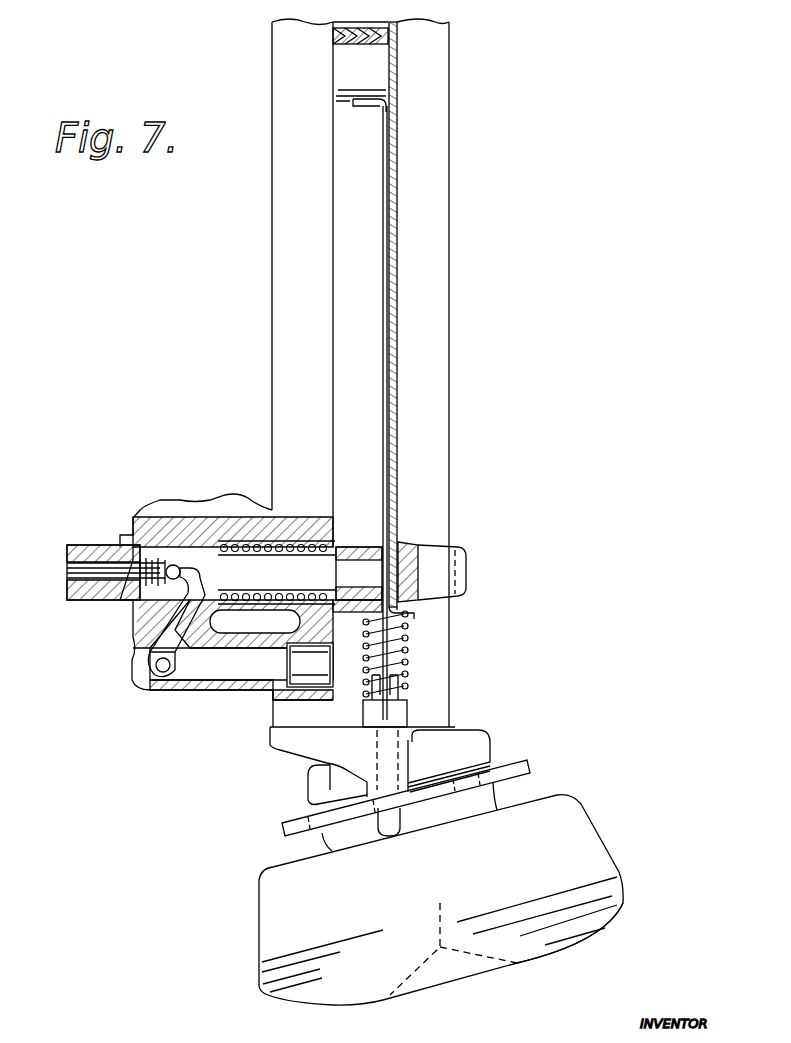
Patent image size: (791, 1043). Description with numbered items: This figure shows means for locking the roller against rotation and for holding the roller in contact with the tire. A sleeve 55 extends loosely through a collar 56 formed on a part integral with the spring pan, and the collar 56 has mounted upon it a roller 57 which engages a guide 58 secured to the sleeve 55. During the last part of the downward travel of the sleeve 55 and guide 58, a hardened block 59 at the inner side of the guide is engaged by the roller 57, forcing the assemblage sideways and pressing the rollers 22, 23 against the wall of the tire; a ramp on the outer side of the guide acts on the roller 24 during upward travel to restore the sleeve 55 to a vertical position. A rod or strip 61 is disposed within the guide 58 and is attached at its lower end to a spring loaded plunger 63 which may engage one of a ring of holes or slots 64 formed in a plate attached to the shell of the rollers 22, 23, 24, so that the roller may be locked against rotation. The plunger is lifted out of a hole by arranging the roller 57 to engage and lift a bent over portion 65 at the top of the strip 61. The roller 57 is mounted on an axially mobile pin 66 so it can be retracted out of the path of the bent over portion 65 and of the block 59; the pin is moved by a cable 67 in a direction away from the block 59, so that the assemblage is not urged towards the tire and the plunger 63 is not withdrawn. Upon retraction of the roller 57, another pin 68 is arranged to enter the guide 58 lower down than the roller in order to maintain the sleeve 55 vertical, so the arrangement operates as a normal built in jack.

The roller 22 is at (258, 907).
The roller 23 is at (600, 930).
The roller 24 is at (453, 935).
The sleeve 55 is at (452, 345).
The collar 56 is at (462, 545).
The roller 57 is at (351, 545).
The guide 58 is at (398, 235).
The hardened block 59 is at (352, 70).
The rod or strip 61 is at (383, 372).
The spring loaded plunger 63 is at (407, 717).
The holes or slots 64 is at (520, 760).
The bent over portion 65 is at (370, 107).
The axially mobile pin 66 is at (190, 562).
The cable 67 is at (67, 572).
The pin 68 is at (272, 693).